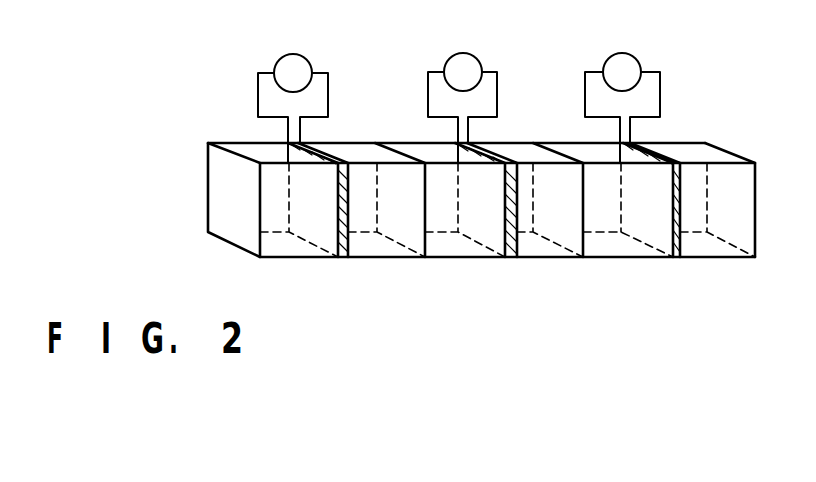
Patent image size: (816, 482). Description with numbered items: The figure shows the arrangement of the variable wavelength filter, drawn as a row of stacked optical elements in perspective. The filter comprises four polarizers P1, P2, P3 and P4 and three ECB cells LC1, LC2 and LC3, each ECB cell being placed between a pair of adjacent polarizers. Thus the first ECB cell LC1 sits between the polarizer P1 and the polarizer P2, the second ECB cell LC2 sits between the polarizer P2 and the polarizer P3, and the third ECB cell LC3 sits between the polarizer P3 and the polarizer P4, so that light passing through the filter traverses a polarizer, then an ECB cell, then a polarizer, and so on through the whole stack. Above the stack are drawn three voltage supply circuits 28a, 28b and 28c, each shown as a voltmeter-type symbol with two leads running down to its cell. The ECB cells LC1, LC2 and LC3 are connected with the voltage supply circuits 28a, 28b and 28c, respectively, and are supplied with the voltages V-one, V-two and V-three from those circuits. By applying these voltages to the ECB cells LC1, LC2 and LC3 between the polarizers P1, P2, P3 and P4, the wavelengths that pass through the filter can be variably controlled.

The voltage supply circuit 28a is at (308, 57).
The voltage supply circuit 28b is at (478, 56).
The voltage supply circuit 28c is at (637, 56).
The polarizer P1 is at (227, 235).
The ECB cell LC1 is at (325, 257).
The polarizer P2 is at (409, 257).
The ECB cell LC2 is at (494, 257).
The polarizer P3 is at (568, 257).
The ECB cell LC3 is at (659, 257).
The polarizer P4 is at (743, 257).